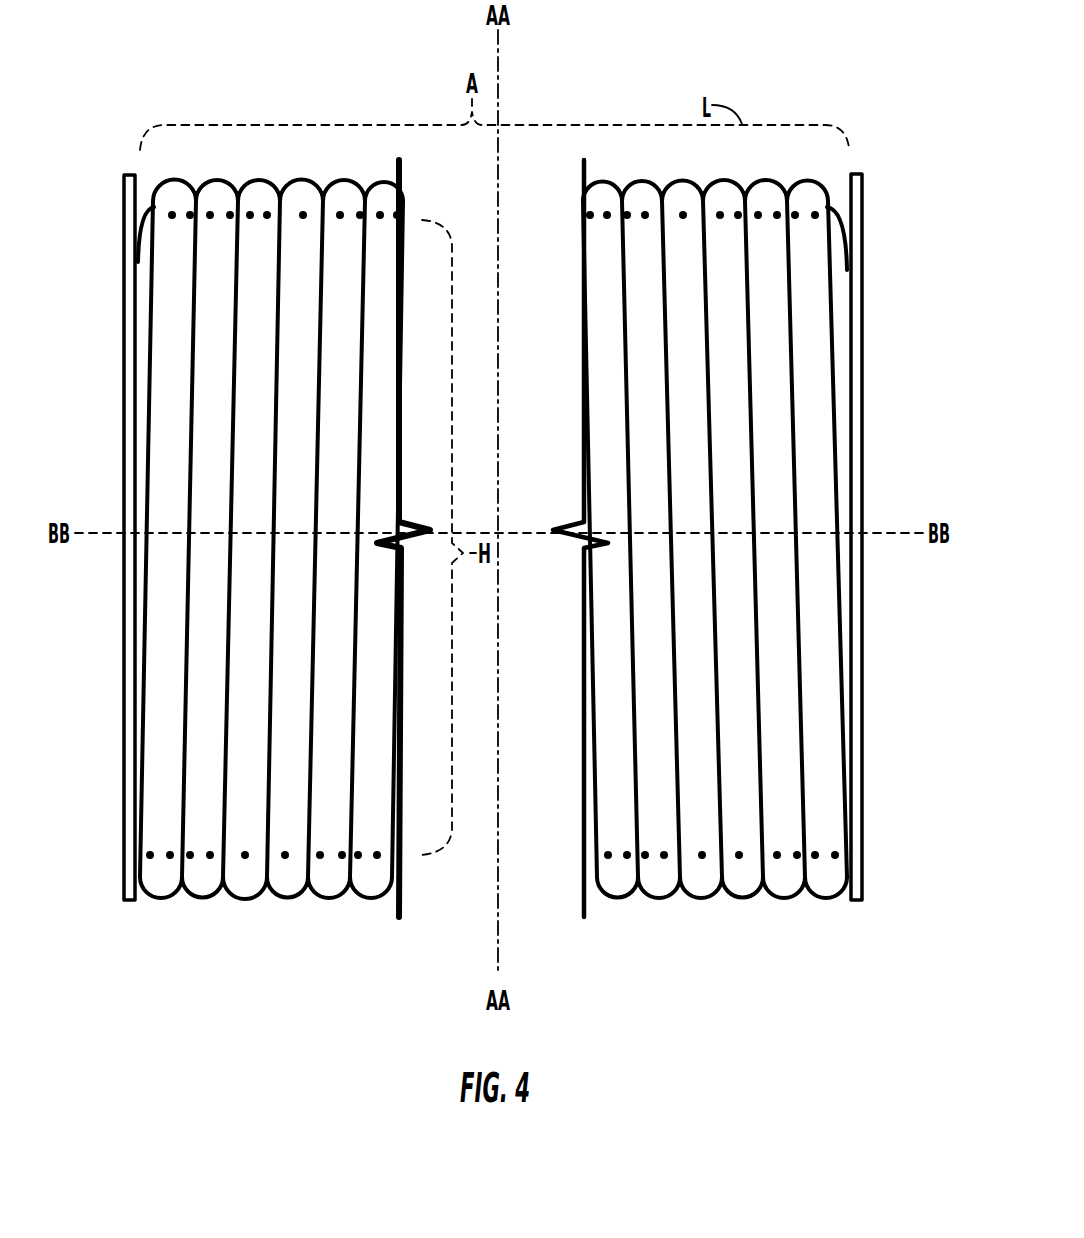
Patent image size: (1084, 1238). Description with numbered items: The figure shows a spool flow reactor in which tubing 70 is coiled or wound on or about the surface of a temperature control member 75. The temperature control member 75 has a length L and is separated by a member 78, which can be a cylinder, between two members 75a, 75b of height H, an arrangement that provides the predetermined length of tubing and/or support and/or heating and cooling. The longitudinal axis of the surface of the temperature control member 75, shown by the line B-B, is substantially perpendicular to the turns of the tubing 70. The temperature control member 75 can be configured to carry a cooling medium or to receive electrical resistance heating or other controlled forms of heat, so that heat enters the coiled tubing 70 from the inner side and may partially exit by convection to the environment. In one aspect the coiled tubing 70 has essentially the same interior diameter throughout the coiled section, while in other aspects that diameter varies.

The temperature control member 75 is at (527, 504).
The member 75a is at (135, 900).
The member 75b is at (856, 900).
The tubing 70 is at (327, 900).
The member 78 is at (582, 848).